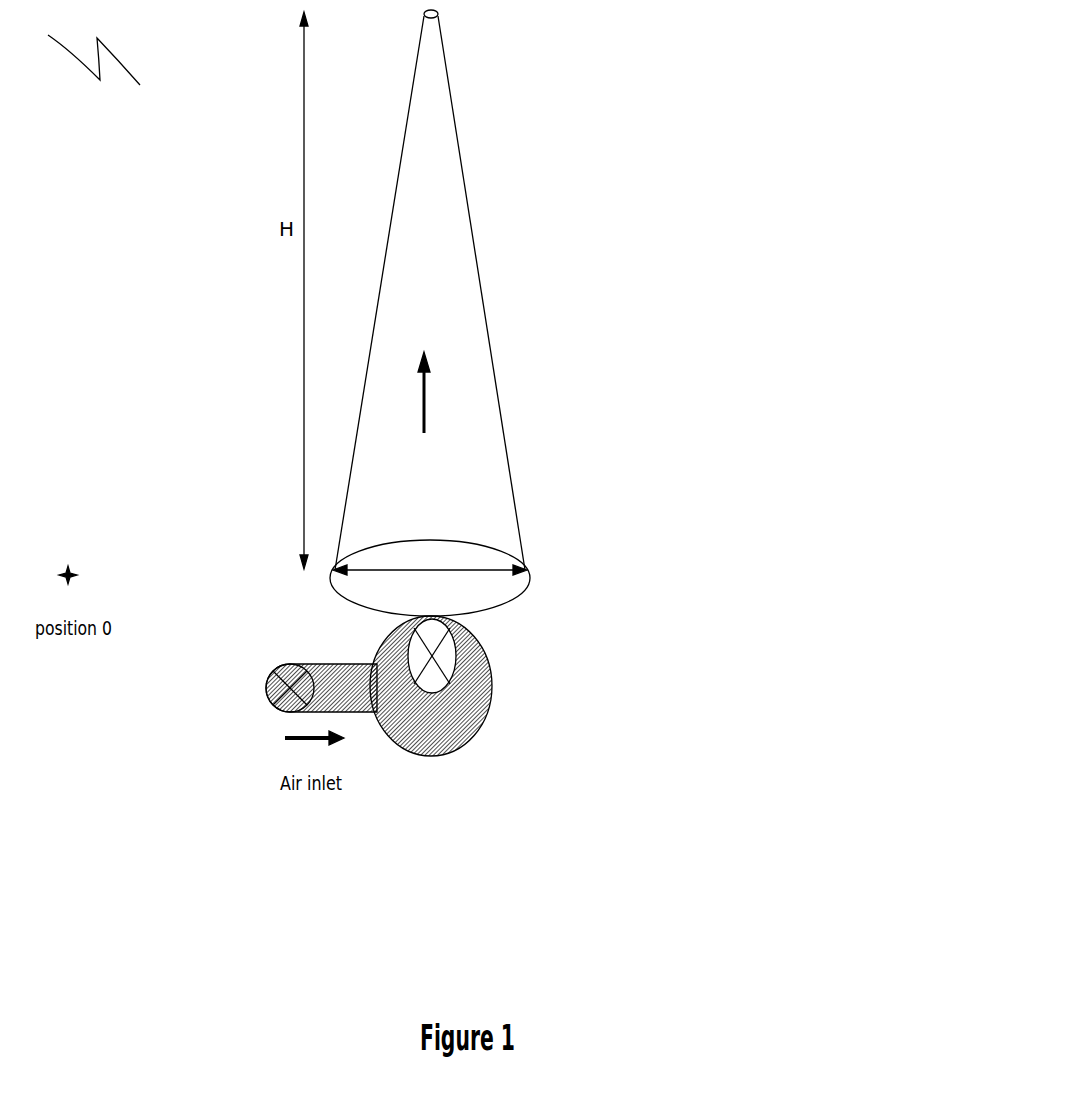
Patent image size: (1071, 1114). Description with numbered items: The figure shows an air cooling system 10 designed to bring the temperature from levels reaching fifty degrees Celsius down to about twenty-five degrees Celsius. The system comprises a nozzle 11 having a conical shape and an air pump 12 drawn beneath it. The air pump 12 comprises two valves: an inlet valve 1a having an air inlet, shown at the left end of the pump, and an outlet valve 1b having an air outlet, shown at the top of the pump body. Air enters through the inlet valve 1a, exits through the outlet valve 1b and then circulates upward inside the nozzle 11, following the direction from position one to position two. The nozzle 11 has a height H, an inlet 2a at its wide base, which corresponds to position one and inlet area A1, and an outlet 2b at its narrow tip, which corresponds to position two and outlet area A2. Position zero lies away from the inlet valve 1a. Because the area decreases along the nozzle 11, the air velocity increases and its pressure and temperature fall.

The air cooling system 10 is at (80, 55).
The nozzle 11 is at (470, 230).
The air pump 12 is at (470, 708).
The inlet valve 1a is at (267, 722).
The outlet valve 1b is at (455, 647).
The inlet 2a is at (527, 570).
The outlet 2b is at (438, 10).